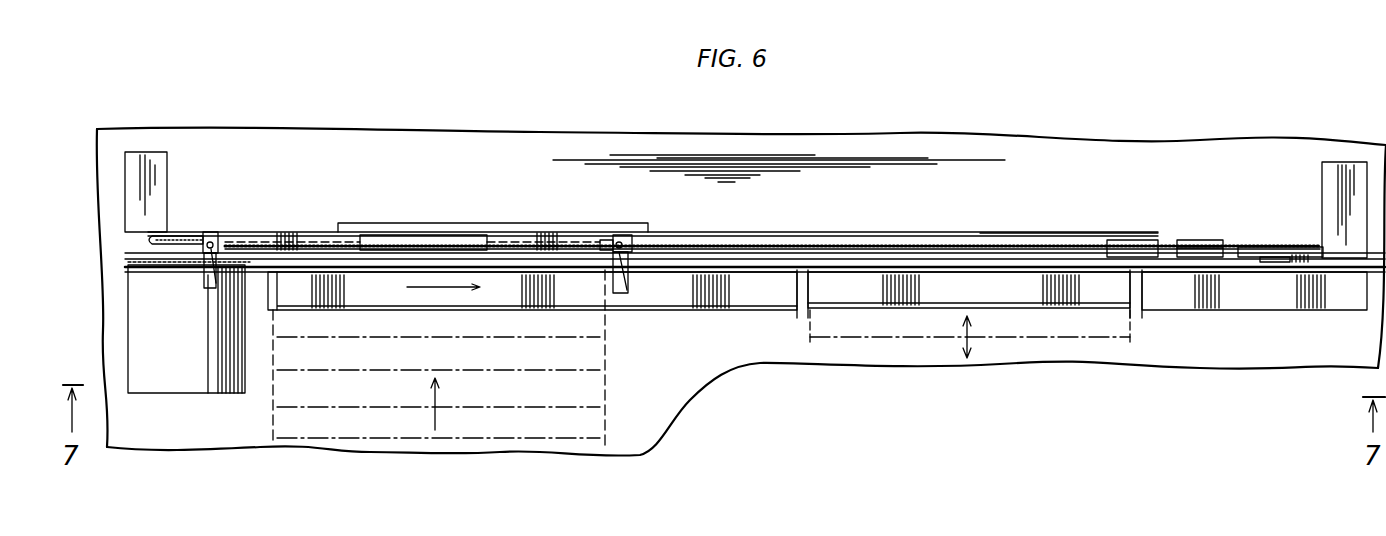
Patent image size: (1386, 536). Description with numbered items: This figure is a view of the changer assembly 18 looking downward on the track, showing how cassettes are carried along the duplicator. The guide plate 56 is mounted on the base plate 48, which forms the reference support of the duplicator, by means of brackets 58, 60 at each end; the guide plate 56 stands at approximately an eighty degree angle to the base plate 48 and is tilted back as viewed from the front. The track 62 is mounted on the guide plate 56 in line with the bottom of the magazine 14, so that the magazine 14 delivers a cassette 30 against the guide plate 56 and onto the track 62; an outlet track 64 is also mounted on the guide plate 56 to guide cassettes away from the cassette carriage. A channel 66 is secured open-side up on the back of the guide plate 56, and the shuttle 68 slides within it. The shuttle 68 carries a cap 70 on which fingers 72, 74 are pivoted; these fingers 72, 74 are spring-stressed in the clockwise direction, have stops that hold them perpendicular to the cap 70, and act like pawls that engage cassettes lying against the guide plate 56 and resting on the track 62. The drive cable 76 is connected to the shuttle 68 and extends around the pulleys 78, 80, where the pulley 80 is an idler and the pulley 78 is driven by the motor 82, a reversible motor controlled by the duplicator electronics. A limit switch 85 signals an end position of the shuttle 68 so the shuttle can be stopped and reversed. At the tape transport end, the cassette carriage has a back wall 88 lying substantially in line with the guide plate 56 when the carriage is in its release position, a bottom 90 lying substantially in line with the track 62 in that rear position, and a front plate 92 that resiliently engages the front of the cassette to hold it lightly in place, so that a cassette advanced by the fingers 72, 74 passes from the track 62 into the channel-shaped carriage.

The base plate 48 is at (242, 143).
The bracket 58 is at (158, 188).
The bracket 60 is at (1325, 190).
The guide plate 56 is at (125, 257).
The channel 66 is at (783, 236).
The shuttle 68 is at (411, 240).
The cap 70 is at (462, 235).
The drive cable 76 is at (901, 243).
The limit switch 85 is at (1193, 238).
The pulley 80 is at (1240, 240).
The pulley 78 is at (147, 234).
The finger 72 is at (214, 236).
The finger 74 is at (616, 236).
The motor 82 is at (188, 345).
The track 62 is at (652, 302).
The cassette 30 is at (537, 394).
The magazine 14 is at (606, 426).
The changer assembly 18 is at (814, 388).
The back wall 88 is at (937, 275).
The bottom 90 is at (1036, 293).
The front plate 92 is at (1084, 304).
The outlet track 64 is at (1262, 302).